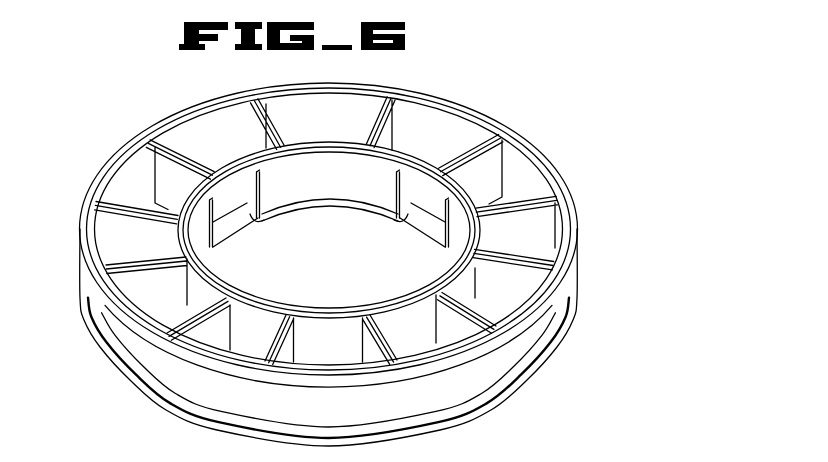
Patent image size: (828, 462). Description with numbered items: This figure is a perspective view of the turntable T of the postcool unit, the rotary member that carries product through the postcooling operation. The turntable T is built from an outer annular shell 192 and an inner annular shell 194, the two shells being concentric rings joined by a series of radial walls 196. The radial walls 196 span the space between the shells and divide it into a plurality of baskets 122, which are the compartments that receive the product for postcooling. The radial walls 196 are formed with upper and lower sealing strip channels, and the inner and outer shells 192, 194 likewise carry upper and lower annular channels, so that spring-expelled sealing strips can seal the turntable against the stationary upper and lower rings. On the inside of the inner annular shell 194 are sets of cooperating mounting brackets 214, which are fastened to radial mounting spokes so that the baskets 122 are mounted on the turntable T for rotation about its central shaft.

The turntable T is at (537, 133).
The baskets 122 is at (336, 98).
The outer annular shell 192 is at (417, 113).
The inner annular shell 194 is at (308, 328).
The radial walls 196 is at (385, 168).
The mounting brackets 214 is at (400, 222).